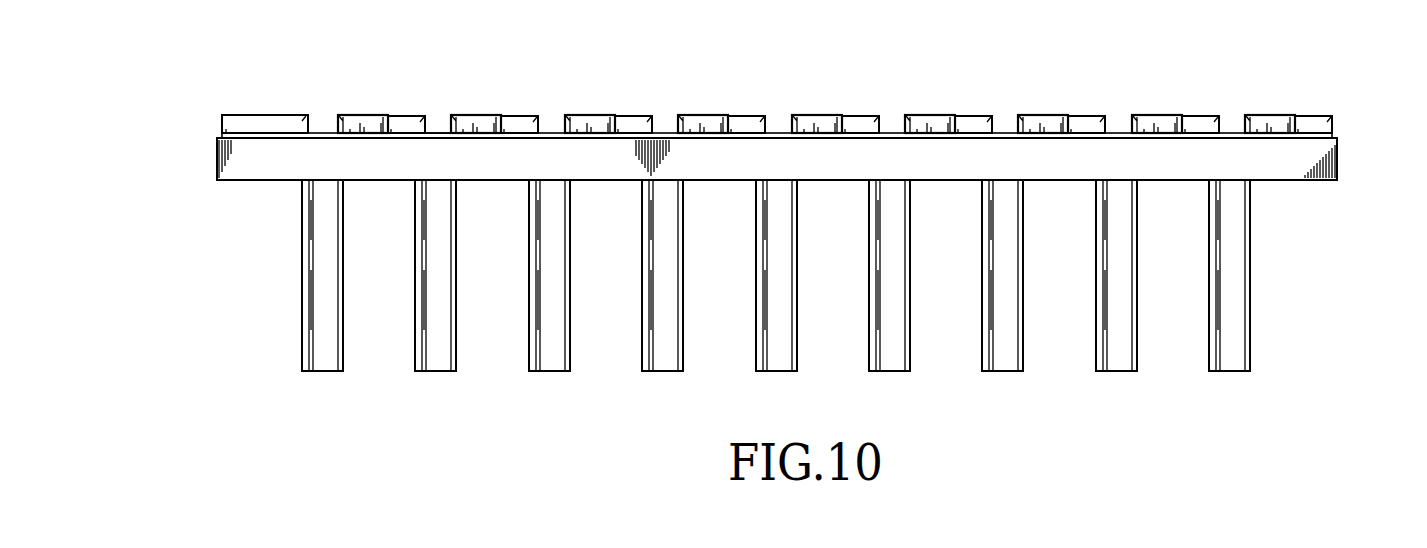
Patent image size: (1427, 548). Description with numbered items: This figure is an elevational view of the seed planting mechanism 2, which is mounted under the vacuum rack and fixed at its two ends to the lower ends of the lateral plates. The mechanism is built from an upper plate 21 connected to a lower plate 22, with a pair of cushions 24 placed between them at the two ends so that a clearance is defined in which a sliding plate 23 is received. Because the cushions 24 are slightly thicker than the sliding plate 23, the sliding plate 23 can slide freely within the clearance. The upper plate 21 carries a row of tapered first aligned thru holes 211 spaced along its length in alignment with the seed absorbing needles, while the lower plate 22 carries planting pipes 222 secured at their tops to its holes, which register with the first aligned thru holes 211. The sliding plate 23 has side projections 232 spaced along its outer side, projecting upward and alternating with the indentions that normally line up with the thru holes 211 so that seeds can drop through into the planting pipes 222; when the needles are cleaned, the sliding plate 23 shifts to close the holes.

The seed planting mechanism 2 is at (372, 84).
The upper plate 21 is at (250, 116).
The first aligned thru holes 211 is at (436, 126).
The lower plate 22 is at (271, 181).
The planting pipes 222 is at (316, 312).
The sliding plate 23 is at (523, 128).
The side projections 232 is at (478, 120).
The cushions 24 is at (222, 136).